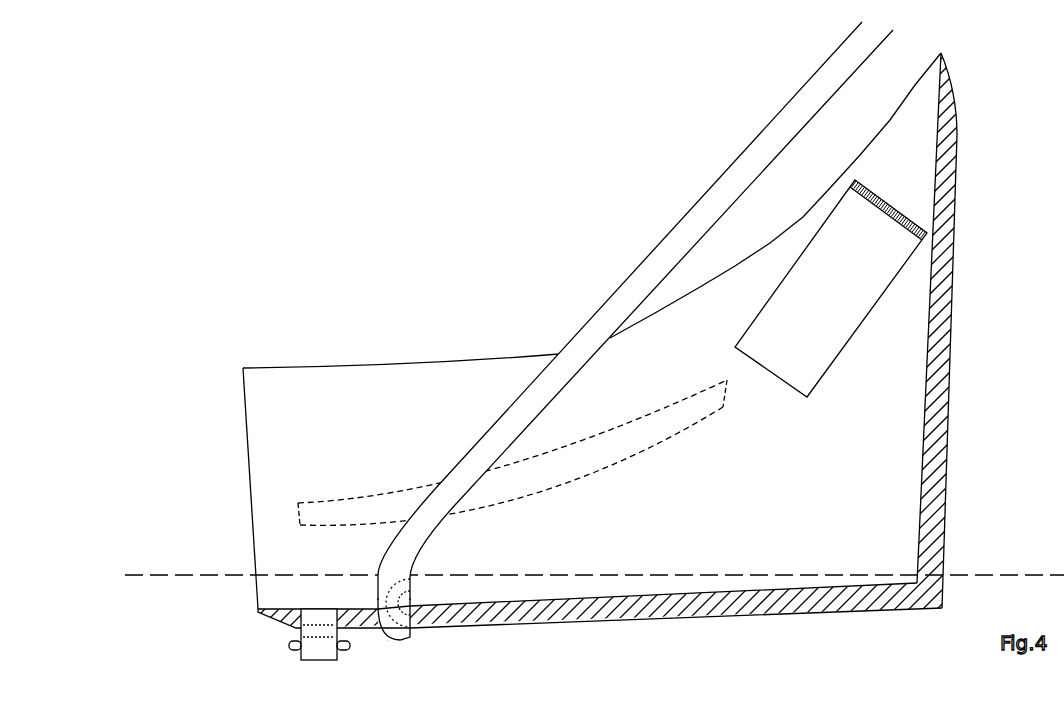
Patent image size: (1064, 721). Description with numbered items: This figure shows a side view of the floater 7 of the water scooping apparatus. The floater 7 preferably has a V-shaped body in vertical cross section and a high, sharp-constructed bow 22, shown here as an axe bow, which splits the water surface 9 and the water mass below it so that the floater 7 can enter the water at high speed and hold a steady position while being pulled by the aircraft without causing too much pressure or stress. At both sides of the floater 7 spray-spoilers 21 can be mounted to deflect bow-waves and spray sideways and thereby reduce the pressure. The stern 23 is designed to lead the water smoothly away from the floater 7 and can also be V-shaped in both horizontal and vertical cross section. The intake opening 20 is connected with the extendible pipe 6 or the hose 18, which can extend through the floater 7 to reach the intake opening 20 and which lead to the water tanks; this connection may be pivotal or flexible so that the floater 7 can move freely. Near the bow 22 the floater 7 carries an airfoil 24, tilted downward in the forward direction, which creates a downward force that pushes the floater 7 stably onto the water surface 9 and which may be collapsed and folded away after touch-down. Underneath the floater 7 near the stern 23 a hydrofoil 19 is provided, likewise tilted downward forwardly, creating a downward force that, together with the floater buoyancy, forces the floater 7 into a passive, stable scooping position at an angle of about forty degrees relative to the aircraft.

The extendible pipe 6 is at (659, 331).
The hose 18 is at (667, 247).
The floater 7 is at (362, 365).
The water surface 9 is at (998, 575).
The hydrofoil 19 is at (300, 650).
The intake opening 20 is at (411, 640).
The spray-spoiler 21 is at (648, 430).
The bow 22 is at (913, 135).
The stern 23 is at (243, 403).
The airfoil 24 is at (897, 257).